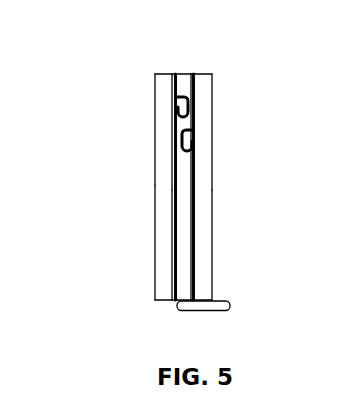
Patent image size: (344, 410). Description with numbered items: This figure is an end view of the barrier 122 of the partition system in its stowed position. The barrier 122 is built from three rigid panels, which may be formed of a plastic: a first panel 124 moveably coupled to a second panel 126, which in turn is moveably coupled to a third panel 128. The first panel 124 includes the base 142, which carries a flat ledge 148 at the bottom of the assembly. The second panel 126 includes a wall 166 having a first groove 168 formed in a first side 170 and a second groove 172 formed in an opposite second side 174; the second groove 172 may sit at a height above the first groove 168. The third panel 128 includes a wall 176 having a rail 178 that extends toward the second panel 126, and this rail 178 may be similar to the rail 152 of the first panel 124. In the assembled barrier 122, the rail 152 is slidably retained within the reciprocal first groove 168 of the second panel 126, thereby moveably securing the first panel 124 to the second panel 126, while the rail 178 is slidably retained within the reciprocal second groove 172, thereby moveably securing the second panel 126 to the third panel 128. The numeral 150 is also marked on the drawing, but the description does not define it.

The barrier 122 is at (110, 41).
The first panel 124 is at (215, 71).
The second panel 126 is at (192, 74).
The third panel 128 is at (153, 160).
The base 142 is at (200, 296).
The flat ledge 148 is at (206, 311).
The second panel 150 is at (203, 216).
The rail 152 is at (194, 133).
The wall 166 is at (173, 247).
The first groove 168 is at (183, 131).
The first side 170 is at (195, 190).
The second groove 172 is at (196, 74).
The second side 174 is at (176, 185).
The wall 176 is at (153, 225).
The rail 178 is at (176, 98).